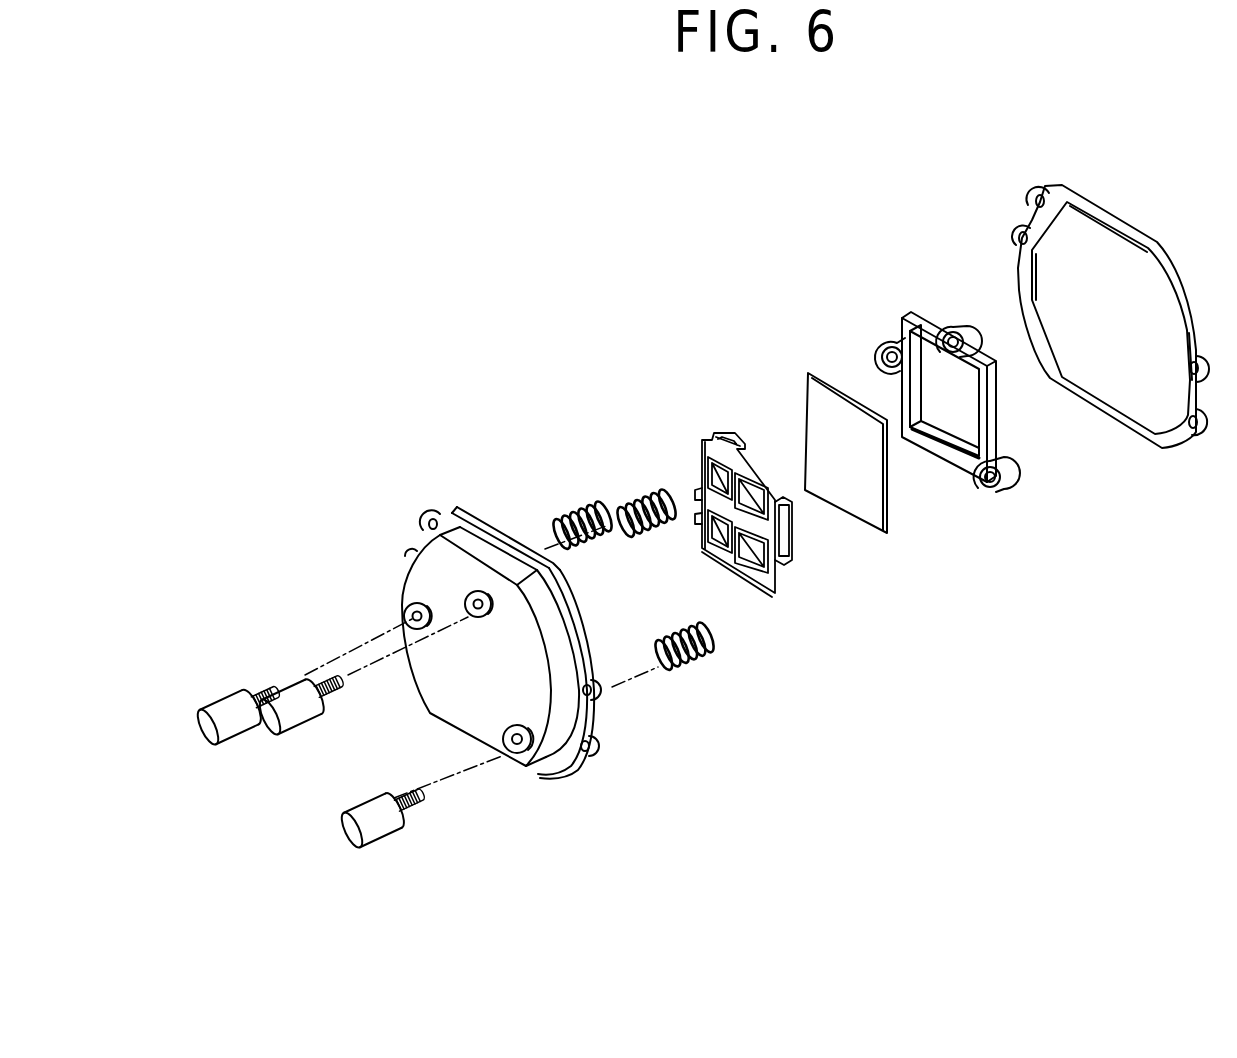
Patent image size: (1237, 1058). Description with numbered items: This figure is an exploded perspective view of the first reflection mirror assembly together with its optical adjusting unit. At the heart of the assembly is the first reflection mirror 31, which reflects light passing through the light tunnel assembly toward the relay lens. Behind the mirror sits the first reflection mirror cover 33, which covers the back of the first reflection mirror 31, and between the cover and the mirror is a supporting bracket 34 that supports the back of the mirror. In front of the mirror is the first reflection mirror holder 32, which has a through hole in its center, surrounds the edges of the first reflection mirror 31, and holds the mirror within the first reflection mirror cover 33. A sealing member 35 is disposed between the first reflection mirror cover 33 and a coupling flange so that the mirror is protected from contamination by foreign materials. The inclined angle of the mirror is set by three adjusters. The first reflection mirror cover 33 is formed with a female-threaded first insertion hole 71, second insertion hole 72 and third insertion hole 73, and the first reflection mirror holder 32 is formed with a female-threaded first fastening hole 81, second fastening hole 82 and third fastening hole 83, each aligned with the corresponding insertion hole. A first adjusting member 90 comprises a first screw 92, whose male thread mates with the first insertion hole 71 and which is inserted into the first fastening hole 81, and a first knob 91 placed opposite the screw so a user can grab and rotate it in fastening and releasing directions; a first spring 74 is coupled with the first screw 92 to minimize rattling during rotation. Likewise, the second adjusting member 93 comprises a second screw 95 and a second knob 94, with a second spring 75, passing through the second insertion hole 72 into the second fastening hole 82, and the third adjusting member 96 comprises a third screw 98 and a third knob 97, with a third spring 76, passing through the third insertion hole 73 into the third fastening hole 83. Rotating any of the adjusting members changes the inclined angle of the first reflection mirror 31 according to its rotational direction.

The first reflection mirror 31 is at (886, 533).
The first reflection mirror holder 32 is at (998, 408).
The first reflection mirror cover 33 is at (577, 763).
The supporting bracket 34 is at (772, 597).
The sealing member 35 is at (1115, 212).
The first insertion hole 71 is at (398, 606).
The second insertion hole 72 is at (462, 590).
The third insertion hole 73 is at (533, 768).
The first spring 74 is at (577, 503).
The second spring 75 is at (639, 490).
The third spring 76 is at (682, 668).
The first fastening hole 81 is at (883, 346).
The second fastening hole 82 is at (940, 327).
The third fastening hole 83 is at (1000, 492).
The first adjusting member 90 is at (234, 655).
The first knob 91 is at (221, 707).
The first screw 92 is at (265, 659).
The second adjusting member 93 is at (301, 756).
The second knob 94 is at (272, 723).
The second screw 95 is at (333, 695).
The third adjusting member 96 is at (403, 862).
The third knob 97 is at (380, 833).
The third screw 98 is at (431, 829).